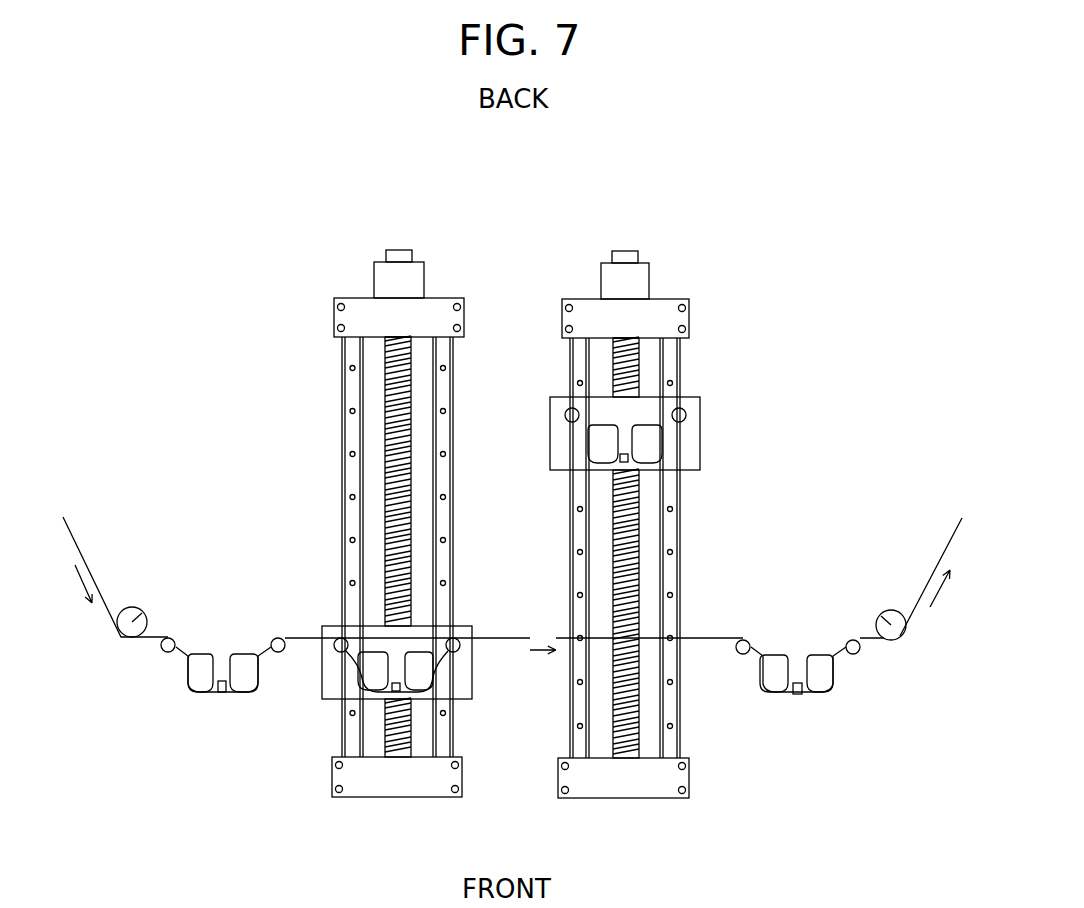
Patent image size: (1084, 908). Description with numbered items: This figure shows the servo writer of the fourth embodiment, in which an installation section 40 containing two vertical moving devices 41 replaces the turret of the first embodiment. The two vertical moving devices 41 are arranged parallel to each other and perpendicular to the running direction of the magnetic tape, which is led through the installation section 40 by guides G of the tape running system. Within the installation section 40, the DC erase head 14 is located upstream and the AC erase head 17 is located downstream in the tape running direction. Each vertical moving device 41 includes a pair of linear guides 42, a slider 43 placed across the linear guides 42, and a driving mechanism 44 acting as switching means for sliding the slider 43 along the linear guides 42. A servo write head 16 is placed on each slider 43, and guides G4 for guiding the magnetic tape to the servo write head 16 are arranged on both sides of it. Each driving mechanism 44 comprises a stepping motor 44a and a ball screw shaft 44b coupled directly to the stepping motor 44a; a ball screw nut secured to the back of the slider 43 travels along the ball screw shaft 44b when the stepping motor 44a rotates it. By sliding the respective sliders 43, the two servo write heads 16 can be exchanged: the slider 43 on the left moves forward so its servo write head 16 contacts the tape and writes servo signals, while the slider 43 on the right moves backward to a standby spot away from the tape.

The installation section 40 is at (549, 248).
The vertical moving device 41 is at (463, 244).
The linear guide 42 is at (348, 356).
The slider 43 is at (462, 626).
The driving mechanism 44 is at (348, 244).
The stepping motor 44a is at (415, 277).
The ball screw shaft 44b is at (400, 343).
The servo write head 16 is at (396, 689).
The DC erase head 14 is at (223, 695).
The AC erase head 17 is at (797, 696).
The guide G is at (124, 640).
The guide G4 is at (341, 638).